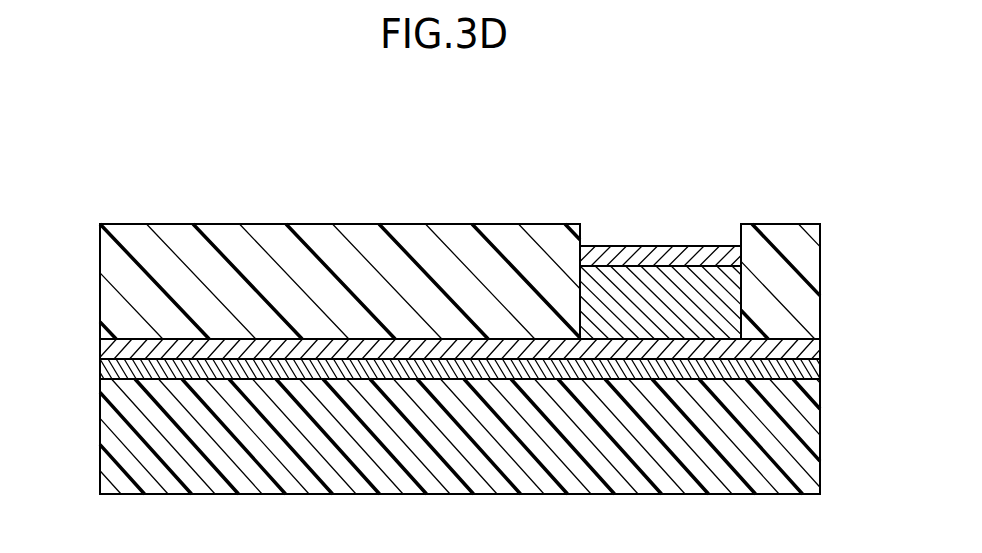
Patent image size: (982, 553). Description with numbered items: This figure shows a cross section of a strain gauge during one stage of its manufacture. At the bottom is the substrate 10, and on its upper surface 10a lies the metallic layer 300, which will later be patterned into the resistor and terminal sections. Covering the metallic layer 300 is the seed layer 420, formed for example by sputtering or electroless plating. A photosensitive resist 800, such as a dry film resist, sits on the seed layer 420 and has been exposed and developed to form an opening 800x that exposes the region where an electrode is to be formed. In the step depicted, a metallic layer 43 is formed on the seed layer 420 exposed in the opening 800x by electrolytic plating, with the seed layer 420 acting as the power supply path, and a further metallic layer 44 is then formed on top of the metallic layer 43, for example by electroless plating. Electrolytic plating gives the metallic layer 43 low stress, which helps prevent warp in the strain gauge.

The substrate 10 is at (120, 427).
The upper surface of the substrate 10a is at (125, 379).
The metallic layer 300 is at (800, 373).
The seed layer 420 is at (793, 348).
The metallic layer 43 is at (730, 300).
The metallic layer 44 is at (729, 255).
The resist 800 is at (777, 237).
The opening 800x is at (741, 237).